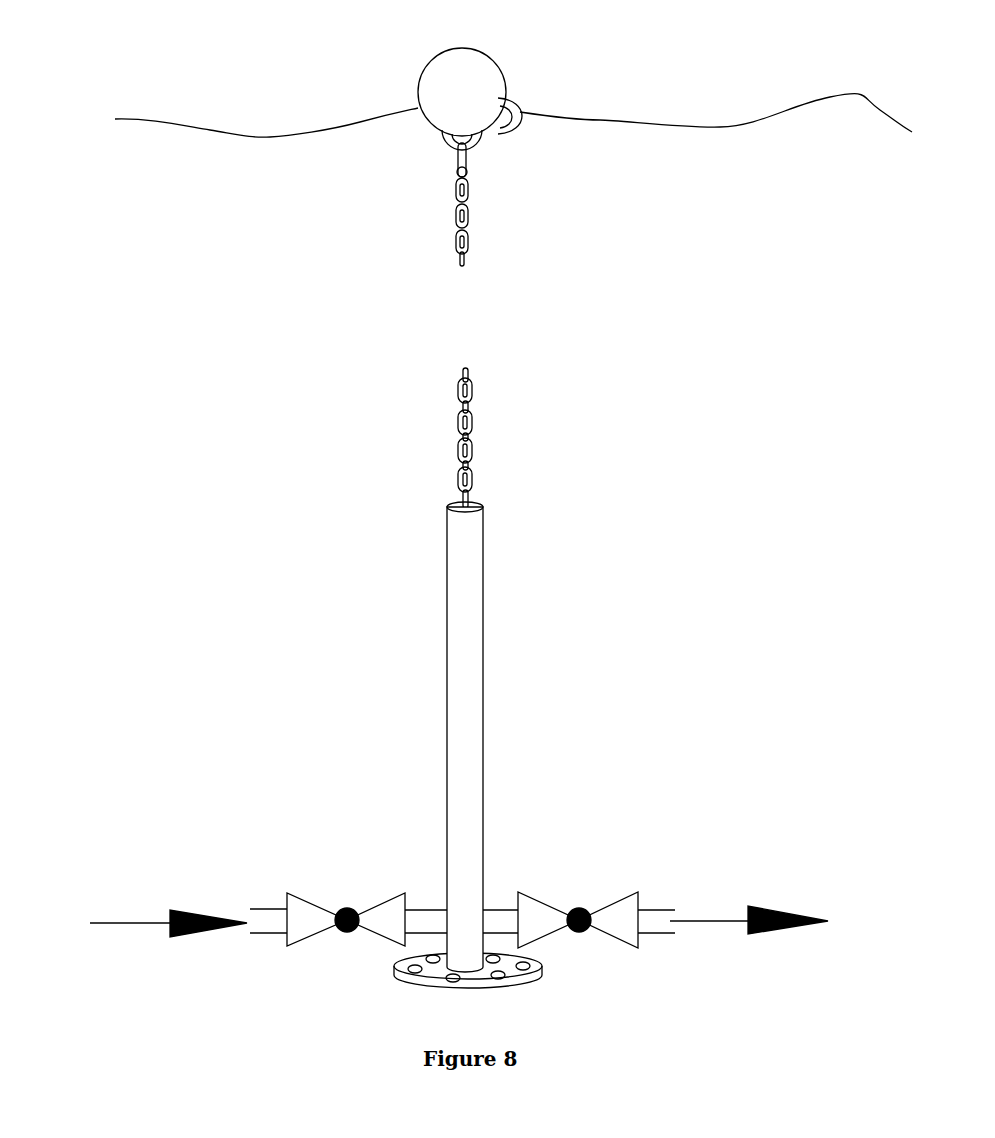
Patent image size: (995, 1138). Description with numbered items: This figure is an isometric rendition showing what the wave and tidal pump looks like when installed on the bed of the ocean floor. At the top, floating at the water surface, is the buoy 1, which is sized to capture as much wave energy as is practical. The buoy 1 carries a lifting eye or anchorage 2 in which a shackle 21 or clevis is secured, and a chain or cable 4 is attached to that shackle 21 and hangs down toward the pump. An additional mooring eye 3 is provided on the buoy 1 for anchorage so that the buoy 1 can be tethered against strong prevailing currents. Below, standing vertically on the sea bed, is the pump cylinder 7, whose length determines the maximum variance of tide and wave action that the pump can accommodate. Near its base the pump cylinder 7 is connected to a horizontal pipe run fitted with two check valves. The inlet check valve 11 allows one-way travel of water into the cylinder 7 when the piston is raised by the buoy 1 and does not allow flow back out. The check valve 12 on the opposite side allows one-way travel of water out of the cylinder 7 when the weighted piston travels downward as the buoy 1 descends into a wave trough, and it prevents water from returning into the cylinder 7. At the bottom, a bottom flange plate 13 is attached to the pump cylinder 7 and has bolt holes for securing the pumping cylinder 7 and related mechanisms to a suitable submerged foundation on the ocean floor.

The buoy 1 is at (418, 83).
The lifting eye or anchorage 2 is at (442, 152).
The mooring eye 3 is at (520, 127).
The shackle 21 is at (468, 163).
The chain or cable 4 is at (460, 423).
The pump cylinder 7 is at (484, 613).
The inlet check valve 11 is at (332, 903).
The check valve 12 is at (578, 905).
The bottom flange plate 13 is at (405, 944).